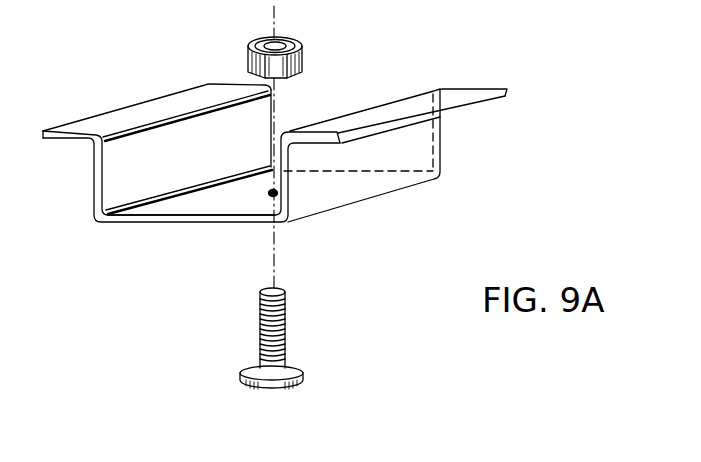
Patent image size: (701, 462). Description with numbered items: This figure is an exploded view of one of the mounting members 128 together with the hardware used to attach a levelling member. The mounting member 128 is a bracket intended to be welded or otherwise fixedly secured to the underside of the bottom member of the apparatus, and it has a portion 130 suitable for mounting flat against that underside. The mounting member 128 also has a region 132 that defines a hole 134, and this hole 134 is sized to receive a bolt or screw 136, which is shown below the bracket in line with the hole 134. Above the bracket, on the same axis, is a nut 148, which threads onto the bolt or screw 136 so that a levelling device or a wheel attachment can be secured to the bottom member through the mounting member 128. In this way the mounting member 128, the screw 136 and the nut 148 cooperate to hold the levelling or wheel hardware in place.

The mounting member 128 is at (279, 148).
The portion 130 is at (129, 107).
The region 132 is at (264, 194).
The hole 134 is at (265, 189).
The bolt or screw 136 is at (287, 328).
The nut 148 is at (303, 56).